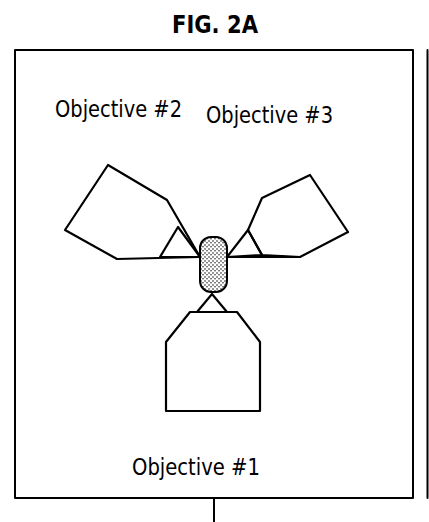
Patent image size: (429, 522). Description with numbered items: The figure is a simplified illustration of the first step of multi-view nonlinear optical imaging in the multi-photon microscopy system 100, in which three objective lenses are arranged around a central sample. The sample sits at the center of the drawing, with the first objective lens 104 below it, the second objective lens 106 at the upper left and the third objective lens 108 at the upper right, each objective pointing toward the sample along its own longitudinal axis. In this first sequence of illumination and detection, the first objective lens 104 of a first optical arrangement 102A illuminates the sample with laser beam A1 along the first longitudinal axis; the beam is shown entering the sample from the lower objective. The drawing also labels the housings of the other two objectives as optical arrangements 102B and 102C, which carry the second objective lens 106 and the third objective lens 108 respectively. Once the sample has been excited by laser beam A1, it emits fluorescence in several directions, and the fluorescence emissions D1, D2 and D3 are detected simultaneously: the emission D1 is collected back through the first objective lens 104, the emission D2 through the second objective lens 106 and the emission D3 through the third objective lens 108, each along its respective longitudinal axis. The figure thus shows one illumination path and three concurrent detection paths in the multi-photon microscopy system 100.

The multi-photon microscopy system 100 is at (246, 88).
The first optical arrangement 102A is at (264, 367).
The second camera / imaging device 102B is at (116, 257).
The third camera / imaging device 102C is at (311, 257).
The first objective lens 104 is at (263, 375).
The second objective lens 106 is at (115, 216).
The third objective lens 108 is at (313, 214).
The laser beam A1 is at (212, 235).
The fluorescence emission D1 is at (225, 302).
The fluorescence emission D2 is at (167, 258).
The fluorescence emission D3 is at (253, 257).